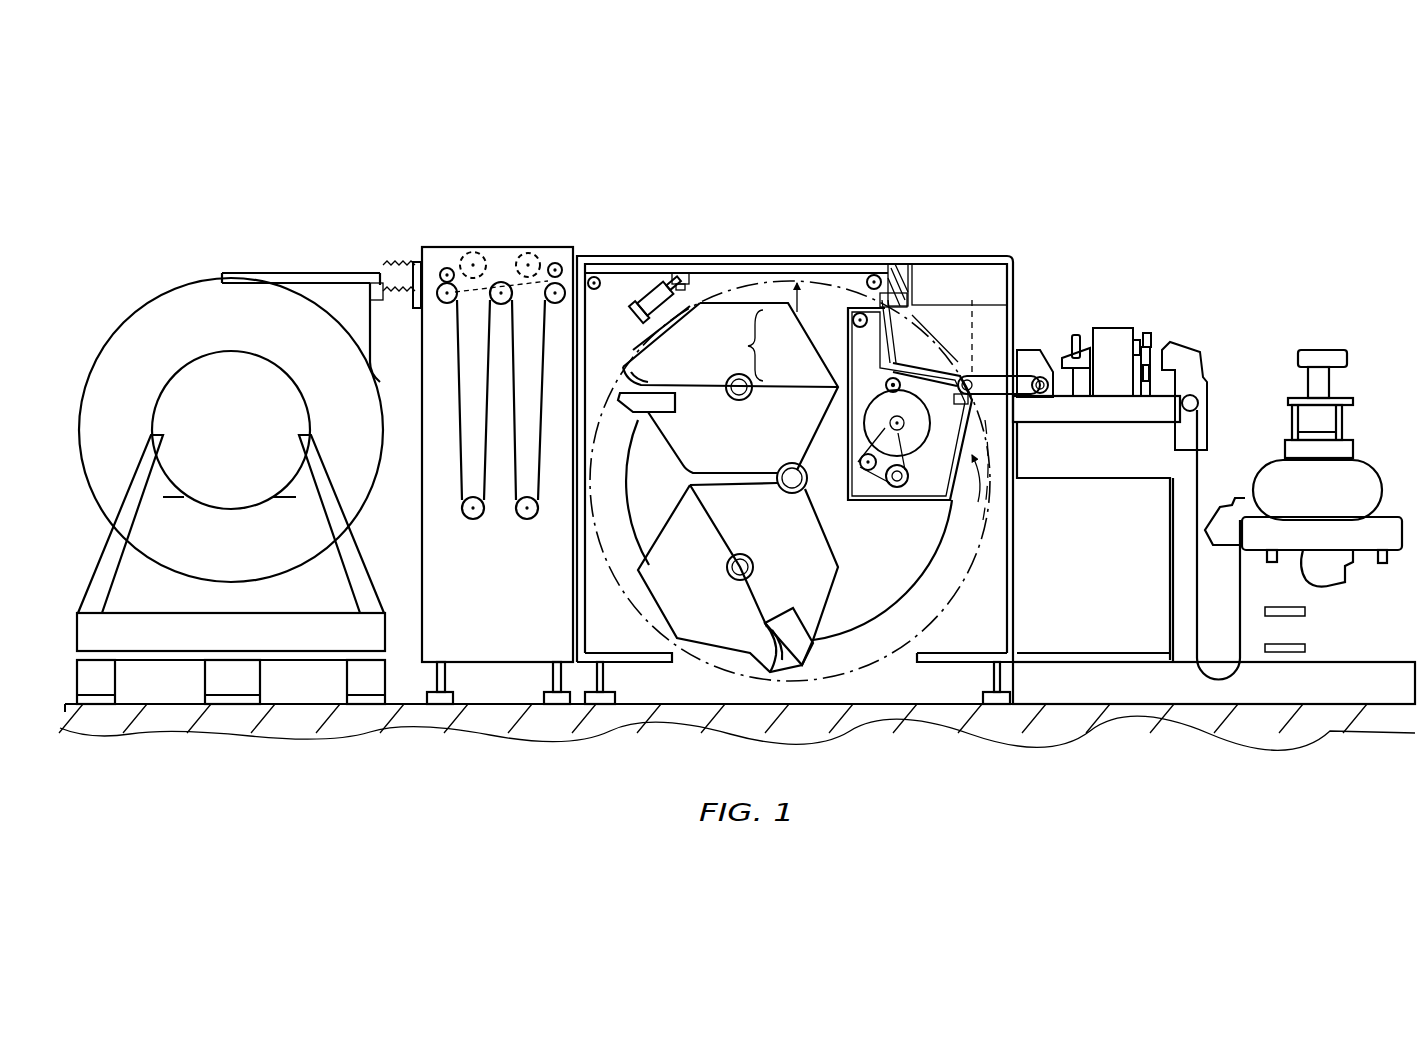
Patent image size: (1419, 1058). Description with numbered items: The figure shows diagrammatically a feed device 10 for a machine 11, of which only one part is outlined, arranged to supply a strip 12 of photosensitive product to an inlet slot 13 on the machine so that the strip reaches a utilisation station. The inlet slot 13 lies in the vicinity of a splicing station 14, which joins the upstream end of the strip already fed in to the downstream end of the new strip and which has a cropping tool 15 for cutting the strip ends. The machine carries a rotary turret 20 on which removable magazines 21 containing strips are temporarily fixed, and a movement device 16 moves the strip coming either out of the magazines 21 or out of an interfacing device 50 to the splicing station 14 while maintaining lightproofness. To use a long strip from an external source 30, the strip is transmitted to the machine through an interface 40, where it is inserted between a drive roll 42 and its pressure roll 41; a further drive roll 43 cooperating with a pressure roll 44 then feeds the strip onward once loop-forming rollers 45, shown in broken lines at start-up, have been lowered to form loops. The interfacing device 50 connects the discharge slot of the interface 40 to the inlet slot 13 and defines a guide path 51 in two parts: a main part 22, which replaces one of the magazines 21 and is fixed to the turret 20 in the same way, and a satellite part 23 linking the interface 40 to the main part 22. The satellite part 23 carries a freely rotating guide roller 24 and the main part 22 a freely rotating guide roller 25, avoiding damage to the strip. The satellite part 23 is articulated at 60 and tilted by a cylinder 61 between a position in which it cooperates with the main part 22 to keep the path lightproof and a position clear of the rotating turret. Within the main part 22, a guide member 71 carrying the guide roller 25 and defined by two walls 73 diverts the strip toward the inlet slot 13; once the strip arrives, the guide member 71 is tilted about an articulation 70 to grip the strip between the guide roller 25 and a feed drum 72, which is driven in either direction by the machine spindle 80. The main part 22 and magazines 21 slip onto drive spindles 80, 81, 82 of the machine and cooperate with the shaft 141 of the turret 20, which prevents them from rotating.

The feed device 10 is at (845, 247).
The machine 11 is at (1230, 296).
The strip 12 is at (458, 452).
The inlet slot 13 is at (1023, 408).
The splicing station 14 is at (1159, 348).
The cropping tool 15 is at (1058, 348).
The movement device 16 is at (992, 383).
The rotary turret 20 is at (872, 601).
The magazines 21 is at (698, 375).
The main part 22 is at (838, 349).
The satellite part 23 is at (797, 257).
The guide roller 24 is at (880, 272).
The guide roller 25 is at (997, 340).
The external source 30 is at (157, 312).
The interface 40 is at (471, 233).
The pressure roll 41 is at (447, 266).
The drive roll 42 is at (440, 305).
The drive roll 43 is at (553, 305).
The pressure roll 44 is at (557, 262).
The loop-forming rollers 45 is at (526, 252).
The interfacing device 50 is at (739, 345).
The guide path 51 is at (673, 268).
The articulation 60 is at (604, 303).
The cylinder 61 is at (638, 336).
The articulation 70 is at (849, 316).
The guide member 71 is at (878, 391).
The feed drum 72 is at (926, 434).
The walls 73 is at (866, 328).
The machine spindle 80 is at (903, 482).
The drive spindle 81 is at (738, 553).
The drive spindle 82 is at (732, 400).
The shaft 141 is at (808, 485).